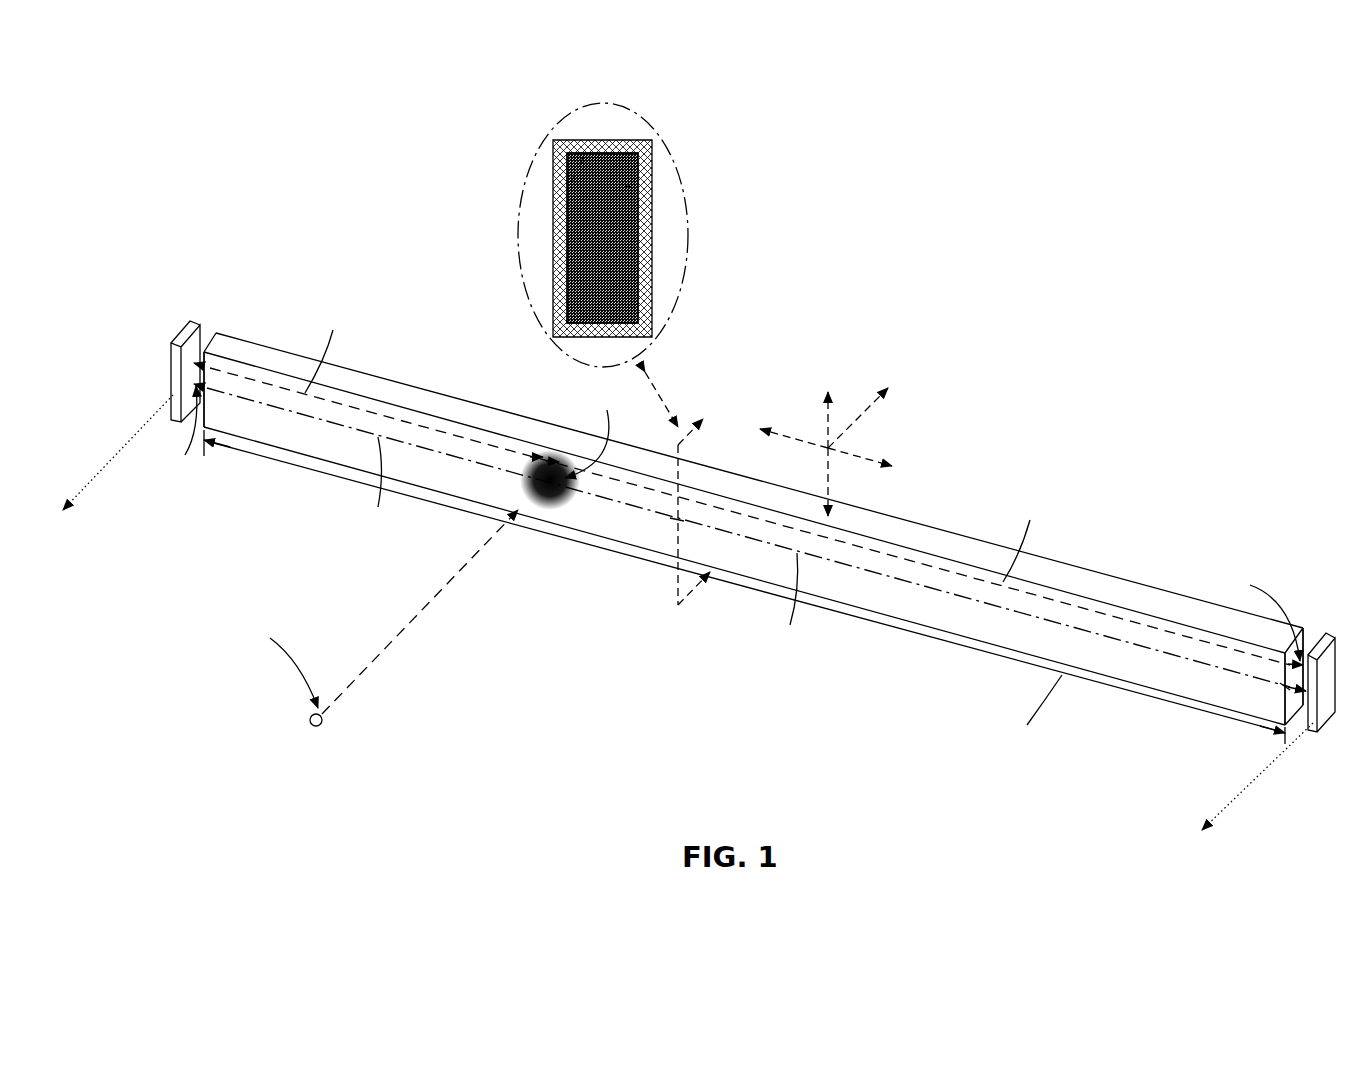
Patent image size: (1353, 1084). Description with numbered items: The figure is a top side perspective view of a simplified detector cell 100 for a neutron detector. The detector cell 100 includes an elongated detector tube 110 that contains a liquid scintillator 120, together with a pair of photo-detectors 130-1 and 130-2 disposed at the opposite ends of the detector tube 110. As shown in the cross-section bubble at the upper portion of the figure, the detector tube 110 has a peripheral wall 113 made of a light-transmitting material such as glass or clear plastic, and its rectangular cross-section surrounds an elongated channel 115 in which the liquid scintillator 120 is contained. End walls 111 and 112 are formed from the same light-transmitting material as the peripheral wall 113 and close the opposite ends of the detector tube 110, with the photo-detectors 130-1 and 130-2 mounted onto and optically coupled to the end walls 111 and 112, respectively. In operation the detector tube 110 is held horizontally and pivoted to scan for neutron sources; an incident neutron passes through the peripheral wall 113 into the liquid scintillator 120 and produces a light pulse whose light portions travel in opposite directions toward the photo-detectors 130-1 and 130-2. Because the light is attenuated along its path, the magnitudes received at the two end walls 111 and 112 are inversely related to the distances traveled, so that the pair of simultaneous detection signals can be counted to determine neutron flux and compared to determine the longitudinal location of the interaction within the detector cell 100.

The detector cell 100 is at (383, 220).
The detector tube 110 is at (548, 285).
The end wall 111 is at (211, 338).
The end wall 112 is at (1309, 636).
The peripheral wall 113 is at (650, 195).
The elongated channel 115 is at (571, 182).
The liquid scintillator 120 is at (625, 227).
The photo-detector 130-1 is at (197, 323).
The photo-detector 130-2 is at (1332, 635).